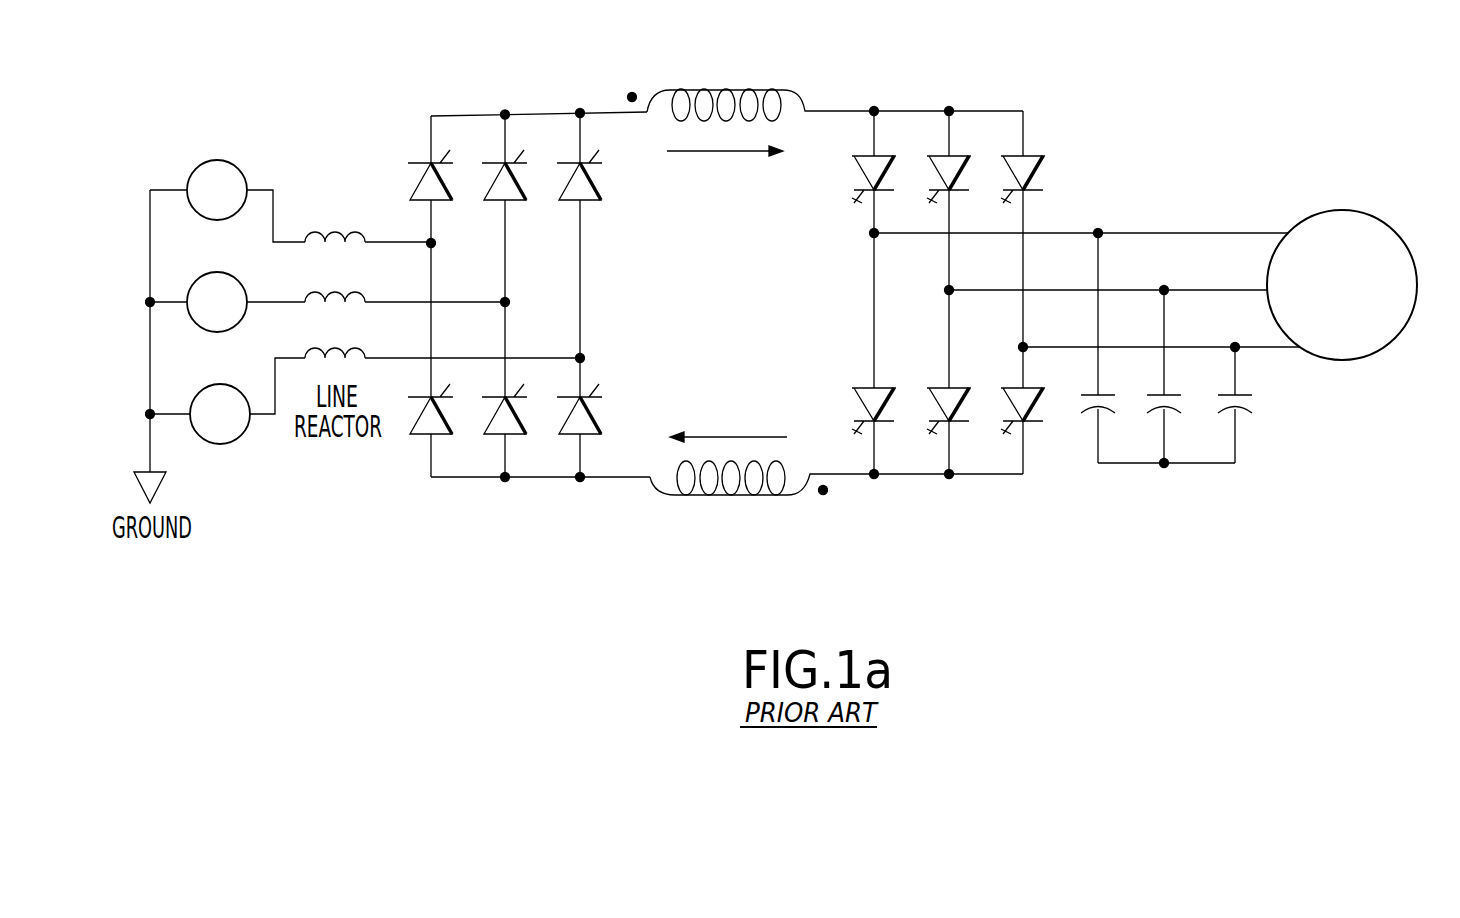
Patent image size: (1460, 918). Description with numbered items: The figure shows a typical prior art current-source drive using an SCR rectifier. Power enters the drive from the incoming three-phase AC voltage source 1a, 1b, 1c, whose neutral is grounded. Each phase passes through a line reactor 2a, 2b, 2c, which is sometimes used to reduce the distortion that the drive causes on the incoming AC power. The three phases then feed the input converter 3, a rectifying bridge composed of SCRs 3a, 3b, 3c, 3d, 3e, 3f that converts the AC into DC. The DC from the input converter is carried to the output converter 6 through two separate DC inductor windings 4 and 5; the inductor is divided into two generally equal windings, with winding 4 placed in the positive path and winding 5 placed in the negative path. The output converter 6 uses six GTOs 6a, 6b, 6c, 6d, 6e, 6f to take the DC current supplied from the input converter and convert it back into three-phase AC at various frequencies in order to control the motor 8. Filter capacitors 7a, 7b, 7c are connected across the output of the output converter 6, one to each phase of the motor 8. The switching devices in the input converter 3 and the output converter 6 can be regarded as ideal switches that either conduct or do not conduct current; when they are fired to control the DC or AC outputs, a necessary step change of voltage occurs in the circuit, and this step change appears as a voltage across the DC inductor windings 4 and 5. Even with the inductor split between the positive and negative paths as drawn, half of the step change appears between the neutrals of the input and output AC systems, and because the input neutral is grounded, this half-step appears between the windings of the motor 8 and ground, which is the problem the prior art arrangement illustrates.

The AC voltage source 1a is at (206, 165).
The AC voltage source 1b is at (206, 277).
The AC voltage source 1c is at (208, 389).
The line reactor 2a is at (325, 231).
The line reactor 2b is at (357, 291).
The line reactor 2c is at (357, 350).
The input converter 3 is at (588, 67).
The SCR 3a is at (443, 203).
The SCR 3b is at (517, 203).
The SCR 3c is at (592, 203).
The SCR 3d is at (443, 437).
The SCR 3e is at (517, 437).
The SCR 3f is at (592, 437).
The DC inductor winding 4 is at (782, 92).
The DC inductor winding 5 is at (785, 497).
The output converter 6 is at (1033, 520).
The GTO 6a is at (888, 155).
The GTO 6b is at (963, 155).
The GTO 6c is at (1037, 155).
The GTO 6d is at (862, 387).
The GTO 6e is at (939, 387).
The GTO 6f is at (1012, 387).
The filter capacitor 7a is at (1110, 411).
The filter capacitor 7b is at (1176, 411).
The filter capacitor 7c is at (1246, 411).
The motor 8 is at (1347, 360).